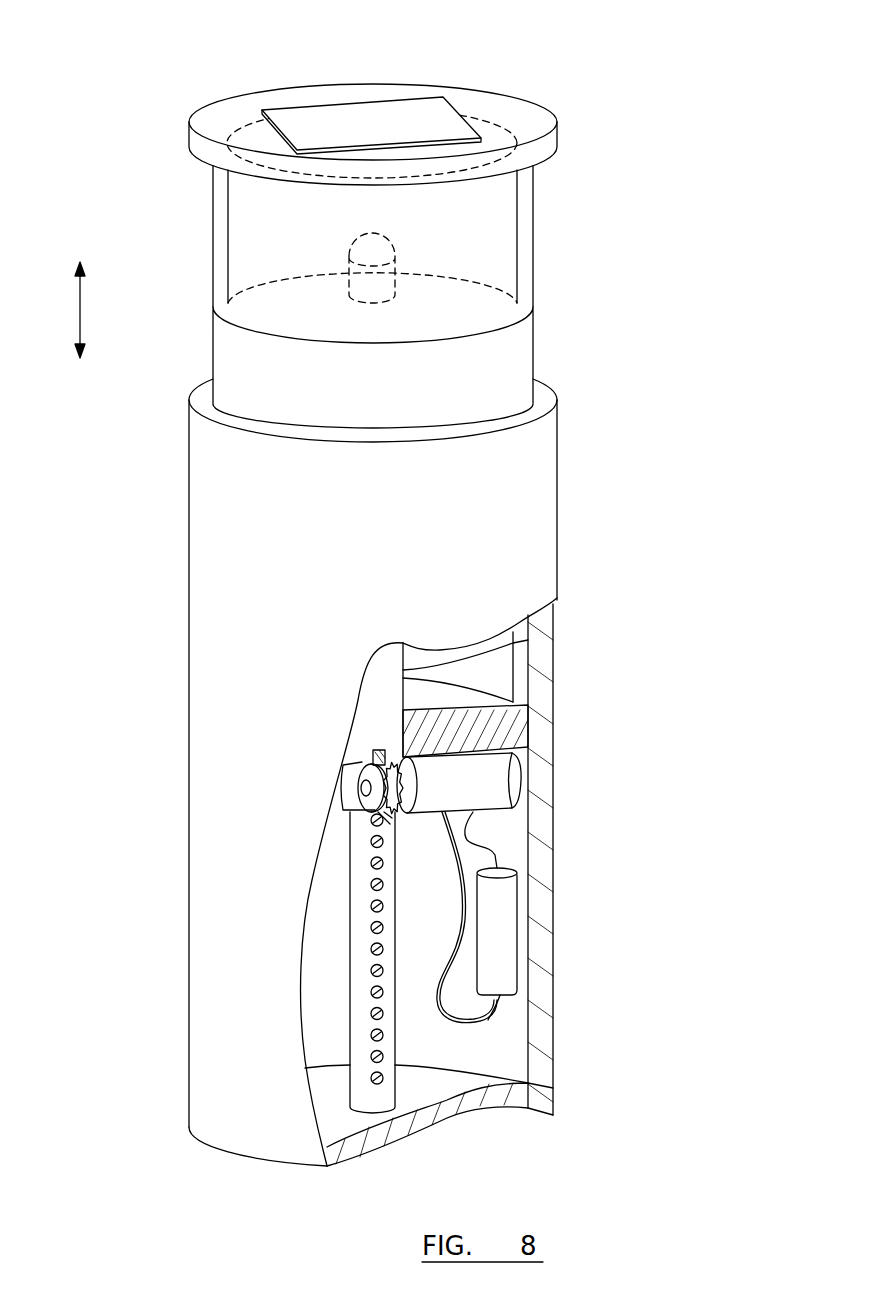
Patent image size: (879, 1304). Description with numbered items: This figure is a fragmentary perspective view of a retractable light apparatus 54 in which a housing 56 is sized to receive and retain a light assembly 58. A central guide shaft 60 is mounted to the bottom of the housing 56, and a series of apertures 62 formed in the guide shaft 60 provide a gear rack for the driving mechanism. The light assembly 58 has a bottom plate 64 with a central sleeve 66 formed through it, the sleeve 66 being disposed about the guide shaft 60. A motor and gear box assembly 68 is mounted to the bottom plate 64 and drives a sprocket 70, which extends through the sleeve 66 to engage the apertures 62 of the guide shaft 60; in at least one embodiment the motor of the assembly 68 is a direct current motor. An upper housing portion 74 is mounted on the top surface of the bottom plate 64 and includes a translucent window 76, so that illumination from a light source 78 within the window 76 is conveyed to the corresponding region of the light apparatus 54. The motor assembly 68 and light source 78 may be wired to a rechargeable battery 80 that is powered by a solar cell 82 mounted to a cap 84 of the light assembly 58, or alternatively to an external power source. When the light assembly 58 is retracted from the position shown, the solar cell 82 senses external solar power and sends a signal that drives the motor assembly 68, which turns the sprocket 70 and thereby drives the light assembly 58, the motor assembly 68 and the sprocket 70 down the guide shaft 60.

The light apparatus 54 is at (677, 147).
The housing 56 is at (564, 488).
The light assembly 58 is at (540, 251).
The guide shaft 60 is at (397, 1022).
The apertures 62 is at (383, 885).
The bottom plate 64 is at (490, 727).
The sleeve 66 is at (528, 640).
The motor and gear box assembly 68 is at (518, 788).
The sprocket 70 is at (372, 753).
The upper housing portion 74 is at (534, 325).
The translucent window 76 is at (211, 178).
The light source 78 is at (347, 262).
The rechargeable battery 80 is at (518, 948).
The solar cell 82 is at (393, 117).
The cap 84 is at (486, 90).